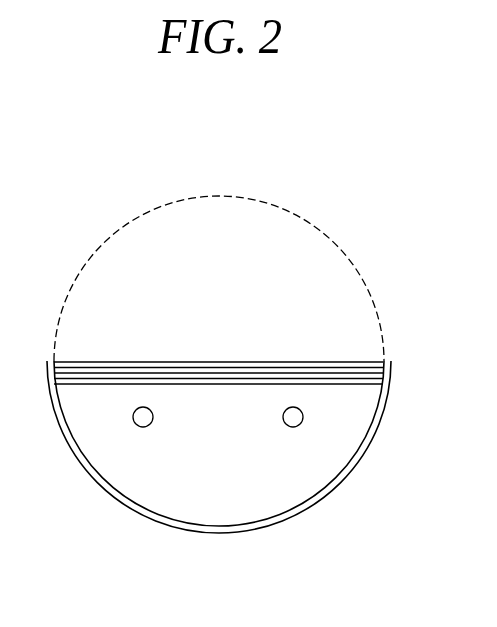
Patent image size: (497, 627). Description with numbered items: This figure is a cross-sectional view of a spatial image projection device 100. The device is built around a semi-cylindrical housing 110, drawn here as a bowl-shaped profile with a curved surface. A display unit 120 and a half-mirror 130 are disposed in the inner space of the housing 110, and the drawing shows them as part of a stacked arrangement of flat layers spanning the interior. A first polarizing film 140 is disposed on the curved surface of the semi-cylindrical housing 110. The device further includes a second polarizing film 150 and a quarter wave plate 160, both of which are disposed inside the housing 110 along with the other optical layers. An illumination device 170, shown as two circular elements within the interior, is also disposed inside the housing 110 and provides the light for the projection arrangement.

The spatial image projection device 100 is at (130, 153).
The housing 110 is at (375, 353).
The display unit 120 is at (382, 362).
The half-mirror 130 is at (384, 374).
The first polarizing film 140 is at (386, 380).
The second polarizing film 150 is at (386, 385).
The quarter wave plate 160 is at (389, 387).
The illumination device 170 is at (150, 424).